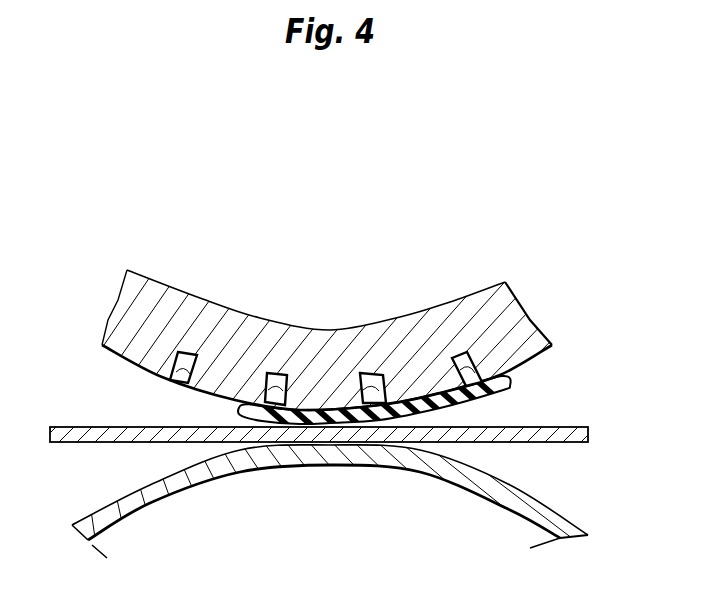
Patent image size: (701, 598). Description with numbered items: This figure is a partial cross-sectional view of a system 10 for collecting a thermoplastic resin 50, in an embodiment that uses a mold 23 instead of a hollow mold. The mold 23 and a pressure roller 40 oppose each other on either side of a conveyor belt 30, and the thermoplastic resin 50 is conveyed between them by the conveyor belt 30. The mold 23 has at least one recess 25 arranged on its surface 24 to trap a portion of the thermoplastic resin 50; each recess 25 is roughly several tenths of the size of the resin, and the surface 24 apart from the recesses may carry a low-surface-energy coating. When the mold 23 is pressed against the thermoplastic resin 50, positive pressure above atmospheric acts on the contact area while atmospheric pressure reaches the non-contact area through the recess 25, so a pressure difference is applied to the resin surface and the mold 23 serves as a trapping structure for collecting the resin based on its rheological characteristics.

The system 10 is at (140, 178).
The mold 23 is at (145, 297).
The surface 24 is at (118, 350).
The recess 25 is at (186, 352).
The conveyor belt 30 is at (93, 445).
The pressure roller 40 is at (550, 505).
The thermoplastic resin 50 is at (510, 383).